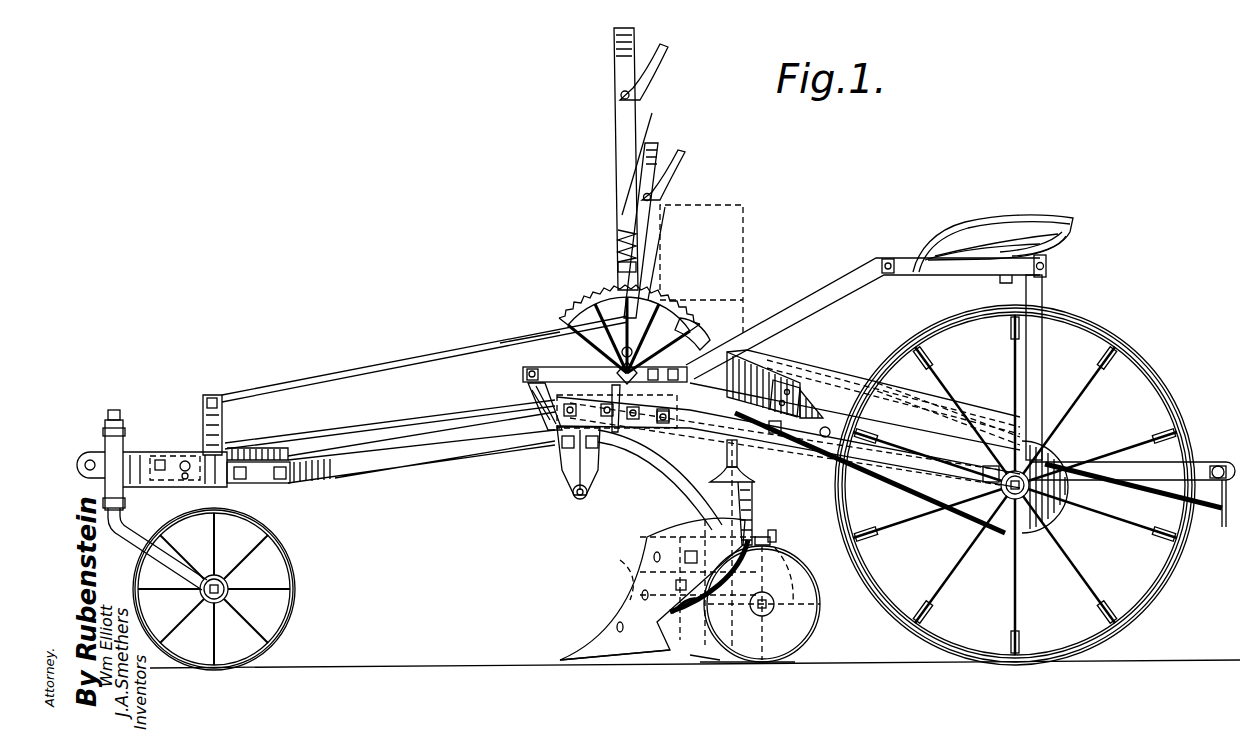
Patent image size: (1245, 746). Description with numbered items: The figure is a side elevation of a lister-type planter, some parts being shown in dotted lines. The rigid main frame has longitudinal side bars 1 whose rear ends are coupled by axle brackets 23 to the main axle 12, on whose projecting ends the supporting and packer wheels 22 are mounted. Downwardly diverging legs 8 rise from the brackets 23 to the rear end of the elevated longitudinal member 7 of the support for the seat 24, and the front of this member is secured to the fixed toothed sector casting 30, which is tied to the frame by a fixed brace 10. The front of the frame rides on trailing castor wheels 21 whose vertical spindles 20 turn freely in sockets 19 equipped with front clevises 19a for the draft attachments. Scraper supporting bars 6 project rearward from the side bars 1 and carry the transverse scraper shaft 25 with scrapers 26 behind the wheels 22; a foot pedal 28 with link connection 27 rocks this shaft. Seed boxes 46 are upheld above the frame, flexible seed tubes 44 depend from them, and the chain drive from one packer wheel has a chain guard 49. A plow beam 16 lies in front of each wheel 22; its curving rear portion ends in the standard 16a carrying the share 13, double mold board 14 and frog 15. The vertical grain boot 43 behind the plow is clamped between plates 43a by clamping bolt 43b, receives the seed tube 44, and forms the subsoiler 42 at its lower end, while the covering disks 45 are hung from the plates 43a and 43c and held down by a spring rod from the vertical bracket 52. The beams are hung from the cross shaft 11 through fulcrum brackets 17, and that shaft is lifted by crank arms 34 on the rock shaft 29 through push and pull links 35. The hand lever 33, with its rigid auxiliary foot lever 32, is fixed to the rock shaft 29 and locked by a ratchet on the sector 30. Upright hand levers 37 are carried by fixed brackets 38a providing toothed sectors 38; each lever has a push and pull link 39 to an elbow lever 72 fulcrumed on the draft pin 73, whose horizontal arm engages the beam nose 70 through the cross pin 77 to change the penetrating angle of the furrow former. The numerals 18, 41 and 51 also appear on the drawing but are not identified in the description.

The side bars 1 is at (880, 457).
The scraper supporting bars 6 is at (1141, 460).
The longitudinal member of the seat support 7 is at (825, 292).
The legs of the seat support 8 is at (1034, 350).
The fixed brace 10 is at (540, 345).
The cross shaft or stay bar 11 is at (578, 500).
The main axle 12 is at (995, 512).
The point or share 13 is at (555, 645).
The double mold board 14 is at (640, 590).
The frog 15 is at (625, 605).
The plow beams 16 is at (445, 452).
The stock or standard 16a is at (660, 525).
The bearing or fulcrum brackets 17 is at (560, 465).
The link 18 is at (935, 400).
The sockets 19 is at (128, 440).
The front clevises 19a is at (100, 455).
The vertical spindles 20 is at (120, 420).
The castor wheels 21 is at (295, 575).
The supporting and packer wheels 22 is at (1150, 583).
The axle brackets 23 is at (985, 472).
The seat 24 is at (1073, 230).
The scraper shaft 25 is at (1218, 465).
The scrapers 26 is at (1218, 523).
The link connection 27 is at (1128, 484).
The foot pedal 28 is at (835, 380).
The rock shaft 29 is at (617, 411).
The fixed toothed sector casting 30 is at (578, 295).
The auxiliary foot lever 32 is at (777, 447).
The hand lever 33 is at (614, 124).
The lift or crank arms 34 is at (552, 366).
The push and pull links 35 is at (530, 386).
The upright hand levers 37 is at (660, 150).
The fixed toothed sectors 38 is at (653, 292).
The fixed brackets 38a is at (615, 432).
The push and pull link 39 is at (386, 372).
The lever link 41 is at (725, 330).
The subsoiler 42 is at (735, 665).
The grain boot 43 is at (750, 497).
The plates 43a is at (695, 605).
The clamping bolt 43b is at (705, 635).
The plates 43c is at (762, 538).
The flexible seed tubes 44 is at (727, 452).
The covering disks 45 is at (815, 628).
The seed boxes 46 is at (745, 240).
The chain guard 49 is at (960, 523).
The scraper 51 is at (790, 550).
The vertical bracket 52 is at (778, 538).
The beam nose or extension 70 is at (283, 483).
The elbow or bell crank lever 72 is at (225, 417).
The draft pin 73 is at (185, 473).
The cross pin or pivot 77 is at (160, 470).